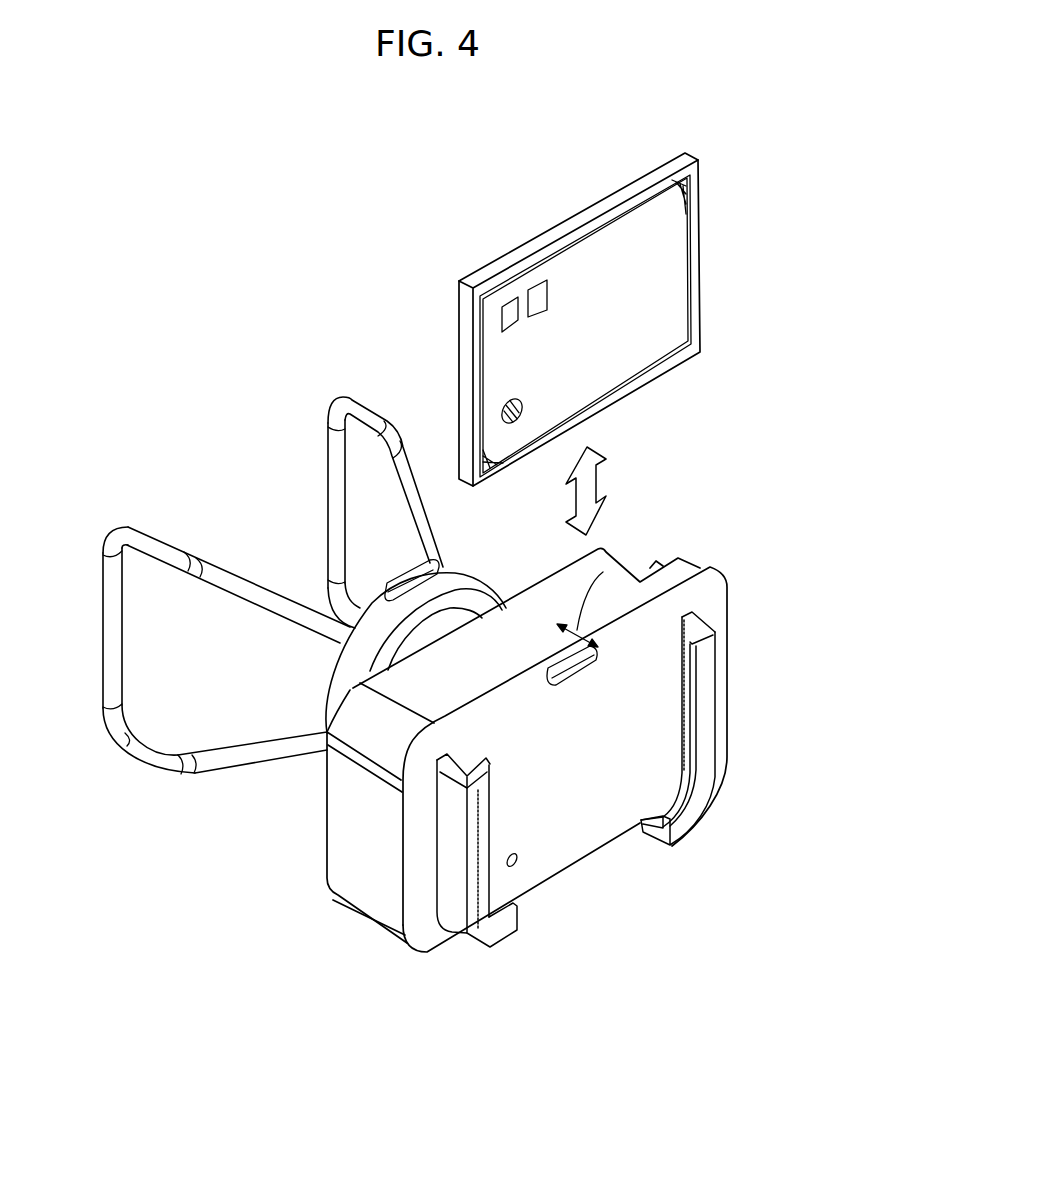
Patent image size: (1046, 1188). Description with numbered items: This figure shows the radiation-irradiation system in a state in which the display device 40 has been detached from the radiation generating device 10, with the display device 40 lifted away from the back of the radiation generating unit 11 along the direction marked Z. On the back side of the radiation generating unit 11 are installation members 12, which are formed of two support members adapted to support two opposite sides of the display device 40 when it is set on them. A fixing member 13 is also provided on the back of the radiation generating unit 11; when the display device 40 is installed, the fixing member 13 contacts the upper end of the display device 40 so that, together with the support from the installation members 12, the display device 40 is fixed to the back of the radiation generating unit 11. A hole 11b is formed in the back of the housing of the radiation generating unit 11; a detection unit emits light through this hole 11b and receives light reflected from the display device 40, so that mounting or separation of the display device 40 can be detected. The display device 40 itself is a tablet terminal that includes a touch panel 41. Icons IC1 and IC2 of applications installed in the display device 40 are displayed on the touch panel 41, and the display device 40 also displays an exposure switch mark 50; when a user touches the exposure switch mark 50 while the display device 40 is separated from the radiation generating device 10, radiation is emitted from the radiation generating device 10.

The radiation generating device 10 is at (448, 710).
The radiation generating unit 11 is at (527, 728).
The hole 11b is at (518, 866).
The installation members 12 is at (706, 712).
The fixing member 13 is at (562, 663).
The display device 40 is at (590, 297).
The touch panel 41 is at (674, 305).
The exposure switch mark 50 is at (518, 423).
The icon IC1 is at (509, 306).
The icon IC2 is at (537, 290).
The axis direction Z is at (603, 572).